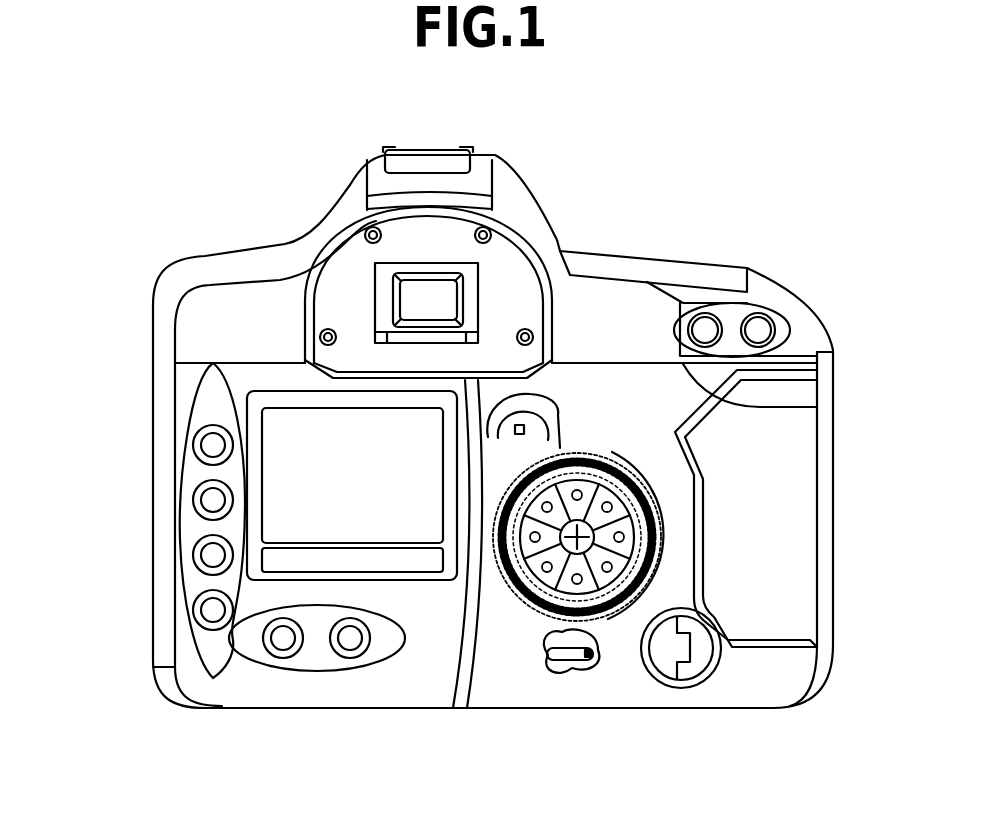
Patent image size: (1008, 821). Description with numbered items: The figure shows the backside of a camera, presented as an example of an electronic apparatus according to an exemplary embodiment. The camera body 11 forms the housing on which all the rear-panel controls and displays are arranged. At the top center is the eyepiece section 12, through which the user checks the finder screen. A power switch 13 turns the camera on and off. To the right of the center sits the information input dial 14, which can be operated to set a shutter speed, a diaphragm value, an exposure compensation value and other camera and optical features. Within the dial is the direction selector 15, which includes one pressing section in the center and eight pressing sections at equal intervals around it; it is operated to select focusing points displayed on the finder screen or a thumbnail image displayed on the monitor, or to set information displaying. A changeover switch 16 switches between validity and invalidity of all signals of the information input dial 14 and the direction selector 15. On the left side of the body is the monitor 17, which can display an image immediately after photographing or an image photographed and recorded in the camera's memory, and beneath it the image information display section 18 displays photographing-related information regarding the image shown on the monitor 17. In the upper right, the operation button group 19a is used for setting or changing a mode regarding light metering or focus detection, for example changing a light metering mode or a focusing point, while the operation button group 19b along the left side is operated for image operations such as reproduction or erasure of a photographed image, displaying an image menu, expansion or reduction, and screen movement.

The camera body 11 is at (235, 298).
The eyepiece section 12 is at (447, 300).
The power switch 13 is at (588, 662).
The information input dial 14 is at (667, 508).
The direction selector 15 is at (624, 538).
The changeover switch 16 is at (538, 394).
The monitor 17 is at (427, 530).
The image information display section 18 is at (408, 562).
The operation button group (B1) 19a is at (786, 327).
The operation button group (B2) 19b is at (185, 645).